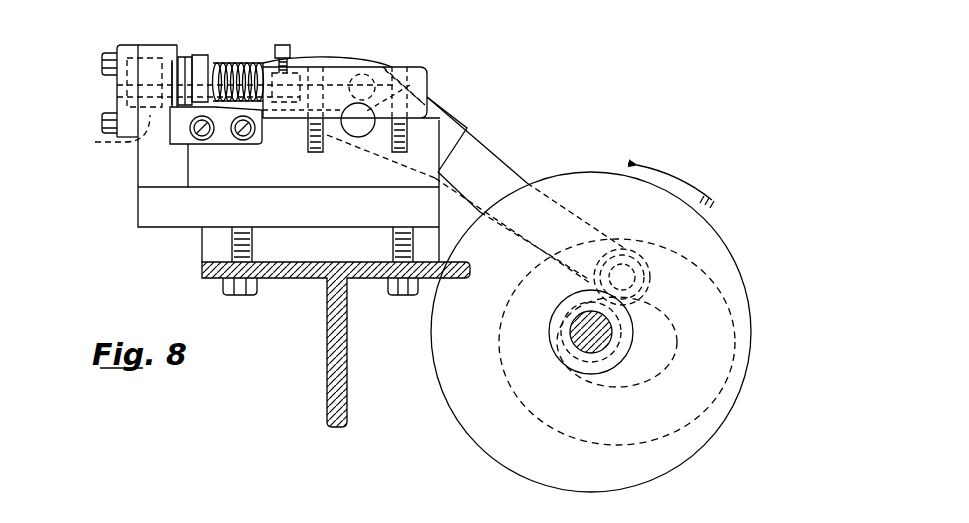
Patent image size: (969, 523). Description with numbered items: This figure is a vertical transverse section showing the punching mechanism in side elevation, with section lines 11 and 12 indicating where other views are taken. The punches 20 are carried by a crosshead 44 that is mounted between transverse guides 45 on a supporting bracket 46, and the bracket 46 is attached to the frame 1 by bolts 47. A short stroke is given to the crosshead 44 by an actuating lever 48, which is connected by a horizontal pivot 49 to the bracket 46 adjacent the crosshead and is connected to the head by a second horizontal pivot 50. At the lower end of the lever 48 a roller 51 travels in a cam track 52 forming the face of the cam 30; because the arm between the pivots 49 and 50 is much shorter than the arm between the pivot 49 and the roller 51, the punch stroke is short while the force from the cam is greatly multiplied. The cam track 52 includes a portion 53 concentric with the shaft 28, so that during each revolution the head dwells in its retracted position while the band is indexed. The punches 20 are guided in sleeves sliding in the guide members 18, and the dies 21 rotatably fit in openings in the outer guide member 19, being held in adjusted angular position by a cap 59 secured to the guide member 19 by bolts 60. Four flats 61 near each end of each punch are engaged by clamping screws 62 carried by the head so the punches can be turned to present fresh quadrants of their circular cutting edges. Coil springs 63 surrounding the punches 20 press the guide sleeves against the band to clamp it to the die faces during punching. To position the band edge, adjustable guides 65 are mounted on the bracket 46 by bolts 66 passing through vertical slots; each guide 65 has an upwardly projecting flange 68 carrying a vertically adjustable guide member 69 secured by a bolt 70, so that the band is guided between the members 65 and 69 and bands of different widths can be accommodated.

The frame 1 is at (325, 382).
The section line 11- 11 is at (117, 85).
The section line 12- 12 is at (163, 163).
The guide member 18 is at (197, 50).
The outer guide member 19 is at (145, 50).
The punch 20 is at (227, 57).
The die 21 is at (112, 135).
The shaft 28 is at (612, 332).
The cam 30 is at (458, 397).
The crosshead 44 is at (343, 63).
The transverse guide 45 is at (427, 82).
The supporting bracket 46 is at (162, 212).
The bolt 47 is at (243, 297).
The actuating lever 48 is at (495, 173).
The horizontal pivot 49 is at (357, 137).
The horizontal pivot 50 is at (383, 67).
The roller 51 is at (653, 290).
The cam track 52 is at (647, 443).
The concentric portion 53 is at (498, 307).
The cap 59 is at (118, 107).
The bolt 60 is at (102, 58).
The flat 61 is at (280, 120).
The clamping screw 62 is at (295, 58).
The coil spring 63 is at (276, 44).
The adjustable guide 65 is at (250, 140).
The bolt 66 is at (200, 133).
The flange 68 is at (200, 43).
The guide member 69 is at (182, 58).
The bolt 70 is at (238, 69).